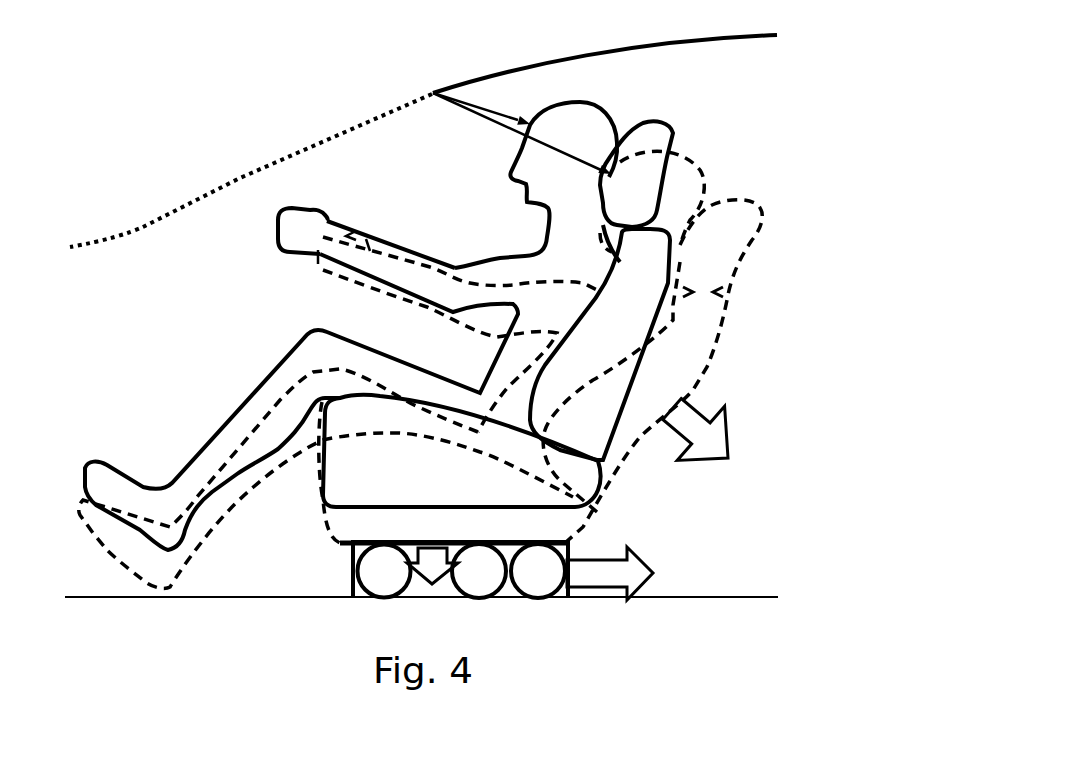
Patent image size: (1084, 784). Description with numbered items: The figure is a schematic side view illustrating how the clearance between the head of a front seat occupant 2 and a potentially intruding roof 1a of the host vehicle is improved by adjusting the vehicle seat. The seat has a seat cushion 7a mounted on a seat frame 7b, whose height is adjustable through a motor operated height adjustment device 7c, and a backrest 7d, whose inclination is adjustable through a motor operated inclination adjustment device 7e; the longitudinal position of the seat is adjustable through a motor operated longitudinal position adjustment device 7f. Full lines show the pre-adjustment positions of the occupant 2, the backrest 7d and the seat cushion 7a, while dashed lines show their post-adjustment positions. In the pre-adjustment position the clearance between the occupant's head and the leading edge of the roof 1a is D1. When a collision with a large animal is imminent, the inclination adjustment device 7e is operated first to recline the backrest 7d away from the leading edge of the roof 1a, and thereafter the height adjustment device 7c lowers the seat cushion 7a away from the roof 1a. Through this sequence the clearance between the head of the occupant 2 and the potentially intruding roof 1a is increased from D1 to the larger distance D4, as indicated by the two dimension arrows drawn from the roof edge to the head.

The roof 1a is at (450, 84).
The occupant 2 is at (588, 147).
The seat cushion 7a is at (446, 490).
The seat frame 7b is at (352, 592).
The motor operated height adjustment device 7c is at (397, 584).
The backrest 7d is at (608, 432).
The motor operated inclination adjustment device 7e is at (492, 584).
The motor operated longitudinal position adjustment device 7f is at (548, 584).
The clearance before adjustment D1 is at (481, 107).
The clearance after adjustment D4 is at (522, 133).